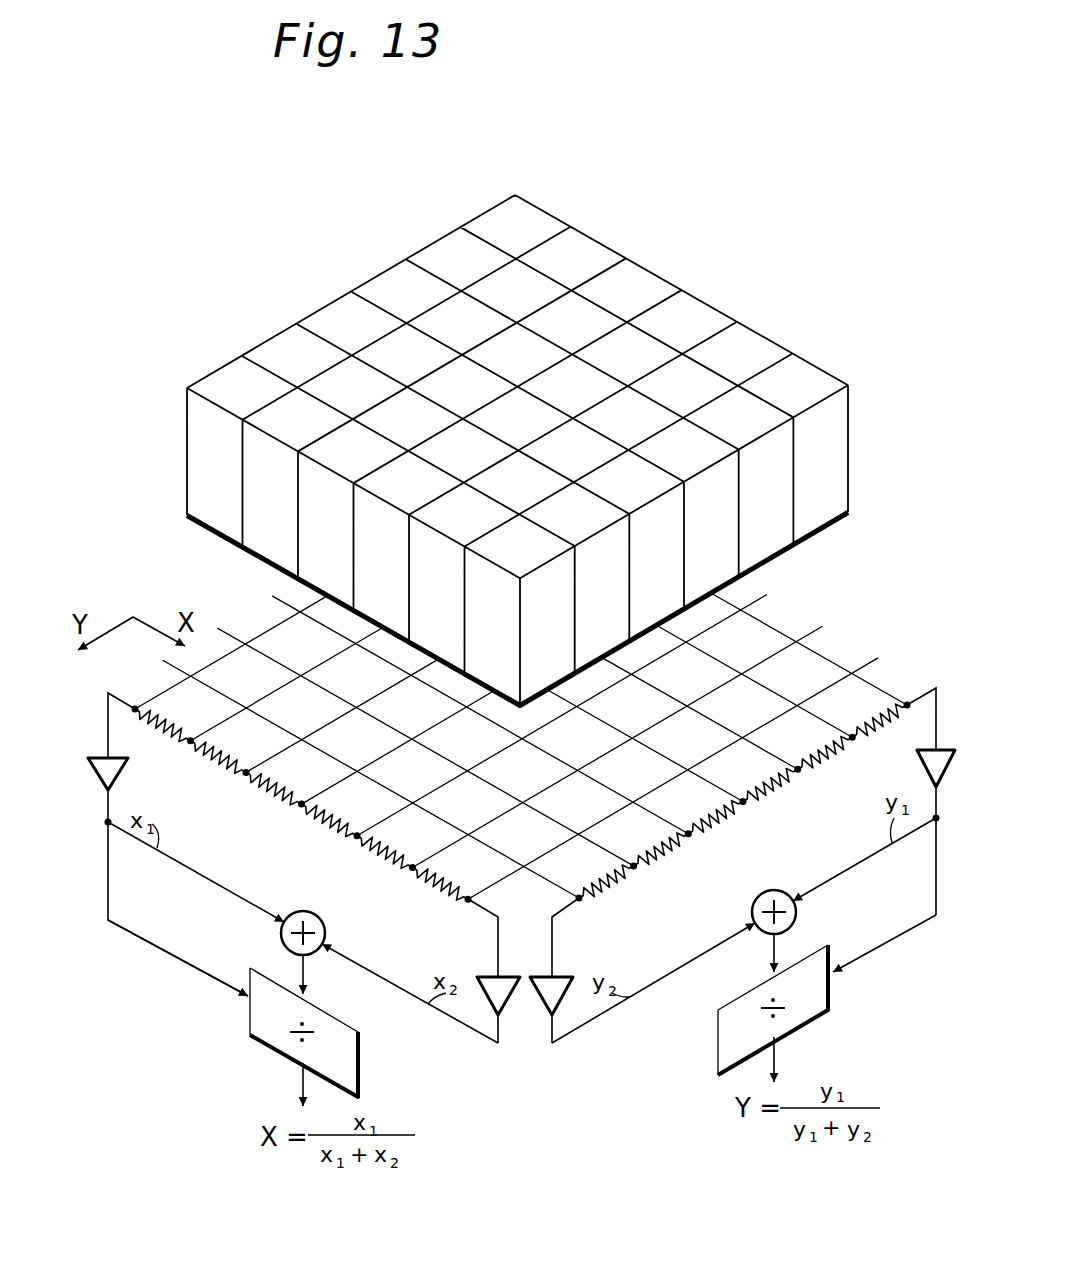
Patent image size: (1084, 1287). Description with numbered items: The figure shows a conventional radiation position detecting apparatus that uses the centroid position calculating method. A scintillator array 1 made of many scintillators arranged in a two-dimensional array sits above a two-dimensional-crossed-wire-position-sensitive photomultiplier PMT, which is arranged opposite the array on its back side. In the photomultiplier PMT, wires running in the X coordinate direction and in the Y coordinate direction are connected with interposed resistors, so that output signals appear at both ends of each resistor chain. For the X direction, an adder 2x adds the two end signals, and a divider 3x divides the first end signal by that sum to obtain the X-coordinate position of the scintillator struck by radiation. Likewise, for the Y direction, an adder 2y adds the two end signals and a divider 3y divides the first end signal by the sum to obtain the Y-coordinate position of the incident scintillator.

The scintillator array 1 is at (758, 316).
The two-dimensional-crossed-wire-position-sensitive photomultiplier PMT is at (932, 597).
The adder 2x is at (303, 911).
The divider 3x is at (358, 1068).
The adder 2y is at (773, 890).
The divider 3y is at (718, 1057).